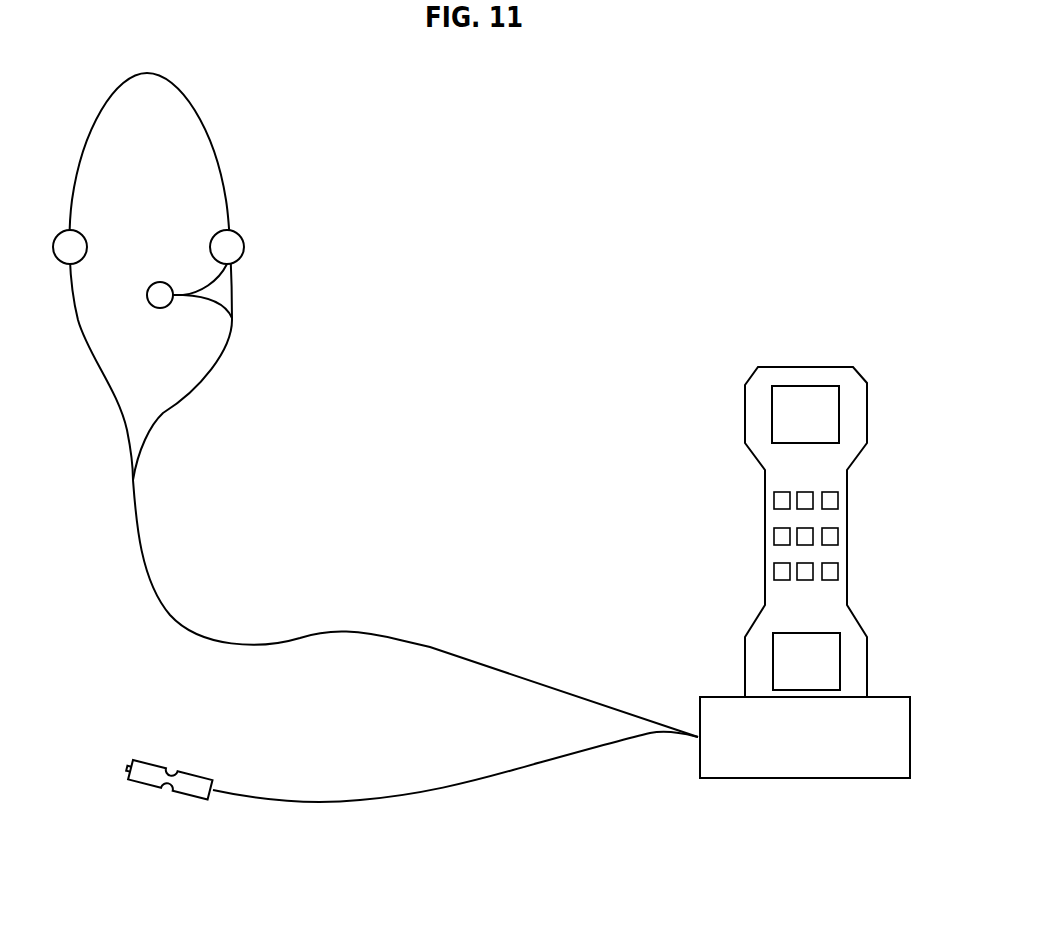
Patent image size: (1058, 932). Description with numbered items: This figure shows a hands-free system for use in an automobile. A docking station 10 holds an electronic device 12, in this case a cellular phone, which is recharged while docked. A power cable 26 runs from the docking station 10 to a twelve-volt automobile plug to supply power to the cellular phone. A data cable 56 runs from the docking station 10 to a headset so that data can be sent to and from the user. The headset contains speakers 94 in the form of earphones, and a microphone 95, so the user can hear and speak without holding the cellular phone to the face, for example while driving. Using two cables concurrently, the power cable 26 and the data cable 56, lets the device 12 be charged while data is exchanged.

The docking station 10 is at (792, 788).
The electronic device 12 is at (768, 342).
The power cable 26 is at (367, 802).
The data cable 56 is at (382, 633).
The speakers 94 is at (87, 237).
The microphone 95 is at (233, 320).